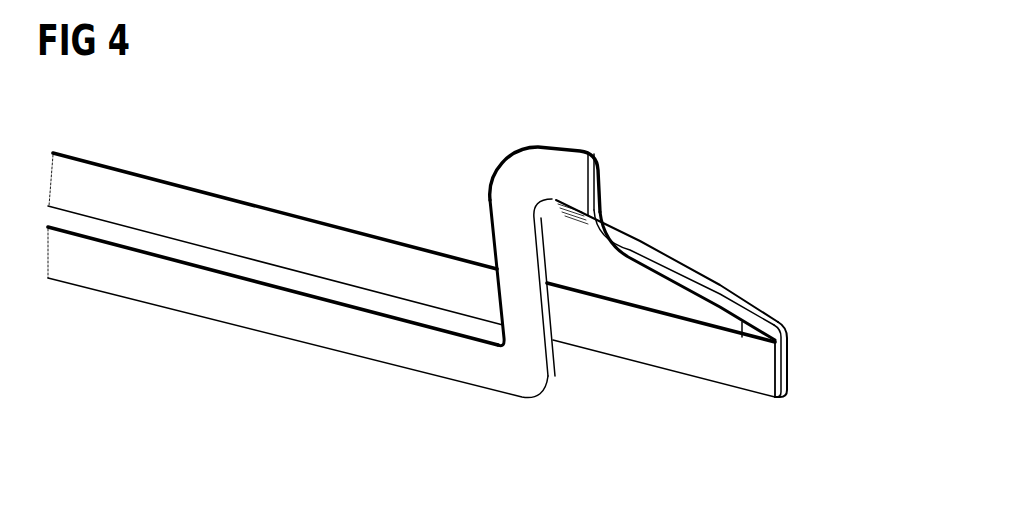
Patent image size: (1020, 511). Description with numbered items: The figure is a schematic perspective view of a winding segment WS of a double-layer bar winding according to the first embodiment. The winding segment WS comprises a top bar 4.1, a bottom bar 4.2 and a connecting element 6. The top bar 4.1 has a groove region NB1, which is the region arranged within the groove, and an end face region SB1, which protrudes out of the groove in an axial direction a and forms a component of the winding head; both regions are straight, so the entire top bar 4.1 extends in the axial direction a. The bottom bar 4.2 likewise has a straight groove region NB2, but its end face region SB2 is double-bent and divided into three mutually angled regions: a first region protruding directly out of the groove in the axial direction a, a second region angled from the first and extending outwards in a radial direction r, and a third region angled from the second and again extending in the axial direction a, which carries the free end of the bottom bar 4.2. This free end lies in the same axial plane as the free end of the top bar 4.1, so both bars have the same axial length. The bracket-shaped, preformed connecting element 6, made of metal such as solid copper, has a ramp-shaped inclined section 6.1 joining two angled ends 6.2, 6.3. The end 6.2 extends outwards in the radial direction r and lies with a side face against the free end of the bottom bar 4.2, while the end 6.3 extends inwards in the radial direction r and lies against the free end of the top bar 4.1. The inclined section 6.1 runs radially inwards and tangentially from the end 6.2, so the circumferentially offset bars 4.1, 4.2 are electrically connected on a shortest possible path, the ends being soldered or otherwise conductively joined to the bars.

The top bar 4.1 is at (411, 288).
The bottom bar 4.2 is at (298, 338).
The connecting element 6 is at (674, 294).
The ramp-shaped inclined section 6.1 is at (655, 252).
The end of the connecting element 6.2 is at (598, 178).
The end of the connecting element 6.3 is at (788, 365).
The end face region SB1 is at (753, 368).
The end face region SB2 is at (528, 313).
The groove region NB1 is at (143, 208).
The groove region NB2 is at (222, 307).
The winding segment WS is at (710, 237).
The axial direction a is at (180, 353).
The radial direction r is at (815, 192).